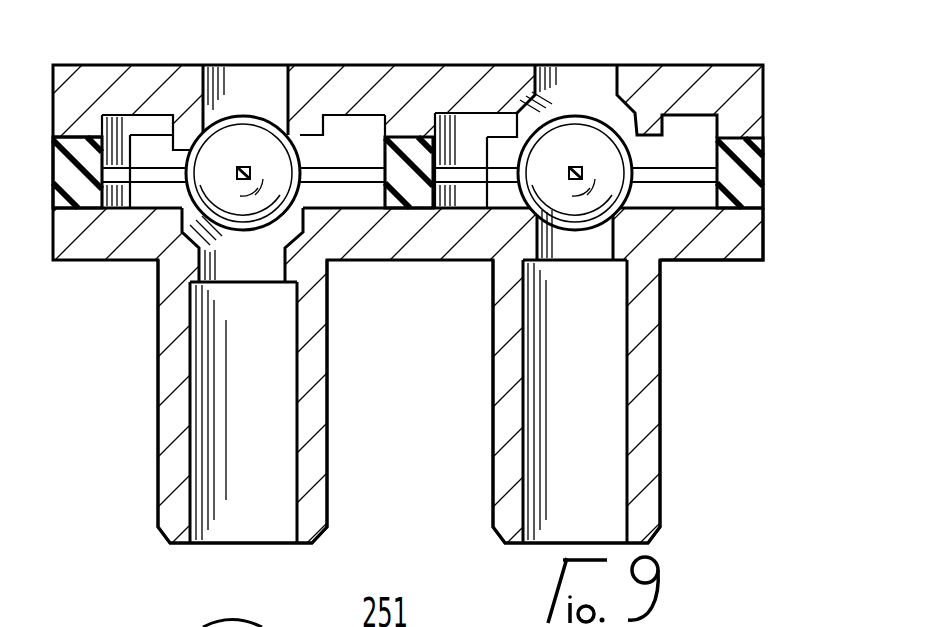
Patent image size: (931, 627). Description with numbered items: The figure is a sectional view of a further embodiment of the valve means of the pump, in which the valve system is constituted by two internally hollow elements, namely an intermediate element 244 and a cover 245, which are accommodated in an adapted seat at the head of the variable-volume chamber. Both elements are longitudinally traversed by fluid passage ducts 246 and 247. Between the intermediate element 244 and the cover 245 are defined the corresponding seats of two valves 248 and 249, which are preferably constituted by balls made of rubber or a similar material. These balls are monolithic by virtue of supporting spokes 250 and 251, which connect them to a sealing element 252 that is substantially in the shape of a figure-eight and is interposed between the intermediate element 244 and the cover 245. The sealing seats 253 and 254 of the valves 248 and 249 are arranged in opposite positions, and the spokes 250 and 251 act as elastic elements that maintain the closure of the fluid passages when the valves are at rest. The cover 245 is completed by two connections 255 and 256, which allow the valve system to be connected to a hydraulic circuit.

The intermediate element 244 is at (685, 80).
The cover 245 is at (705, 240).
The fluid passage duct 246 is at (578, 80).
The fluid passage duct 247 is at (235, 80).
The valve 248 is at (558, 153).
The valve 249 is at (255, 212).
The supporting spoke 250 is at (687, 175).
The supporting spoke 251 is at (147, 175).
The sealing element 252 is at (738, 203).
The sealing seat 253 is at (623, 212).
The sealing seat 254 is at (272, 147).
The connection 255 is at (652, 450).
The connection 256 is at (310, 505).